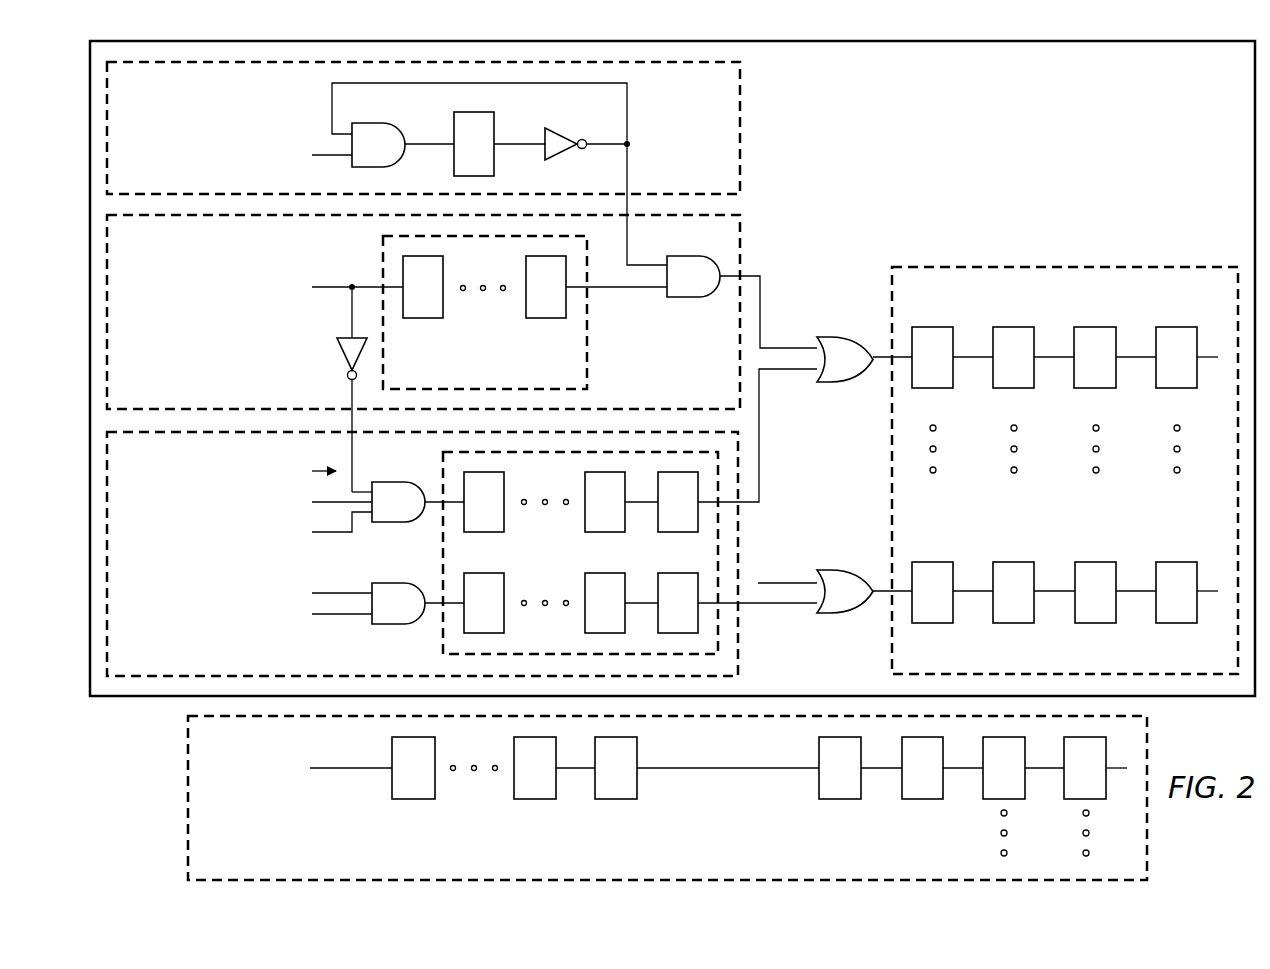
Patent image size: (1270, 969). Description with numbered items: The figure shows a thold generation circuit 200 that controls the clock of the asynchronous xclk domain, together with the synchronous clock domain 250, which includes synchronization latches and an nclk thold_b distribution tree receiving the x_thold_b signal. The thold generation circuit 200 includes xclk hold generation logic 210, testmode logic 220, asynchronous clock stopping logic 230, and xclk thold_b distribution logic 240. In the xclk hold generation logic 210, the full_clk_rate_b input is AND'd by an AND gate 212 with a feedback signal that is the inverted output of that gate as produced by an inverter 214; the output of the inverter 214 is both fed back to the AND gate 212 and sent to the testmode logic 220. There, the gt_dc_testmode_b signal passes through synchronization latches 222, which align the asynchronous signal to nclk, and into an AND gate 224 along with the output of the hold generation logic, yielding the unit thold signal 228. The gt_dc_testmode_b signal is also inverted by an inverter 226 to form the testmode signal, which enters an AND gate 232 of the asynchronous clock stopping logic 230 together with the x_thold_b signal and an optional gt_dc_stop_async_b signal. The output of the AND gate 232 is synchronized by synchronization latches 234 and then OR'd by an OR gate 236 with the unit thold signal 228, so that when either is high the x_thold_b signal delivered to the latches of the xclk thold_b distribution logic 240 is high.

The thold generation circuit 200 is at (1032, 147).
The xclk hold generation logic 210 is at (462, 163).
The AND gate 212 is at (394, 124).
The inverter 214 is at (559, 131).
The testmode logic 220 is at (462, 312).
The synchronization latches 222 is at (592, 352).
The AND gate 224 is at (687, 298).
The inverter 226 is at (338, 350).
The unit thold signal 228 is at (800, 306).
The asynchronous clock stopping logic 230 is at (462, 527).
The AND gate 232 is at (381, 524).
The synchronization latches 234 is at (563, 485).
The OR gate 236 is at (840, 384).
The xclk thold_b distribution logic 240 is at (1066, 264).
The synchronous clock domain 250 is at (685, 854).